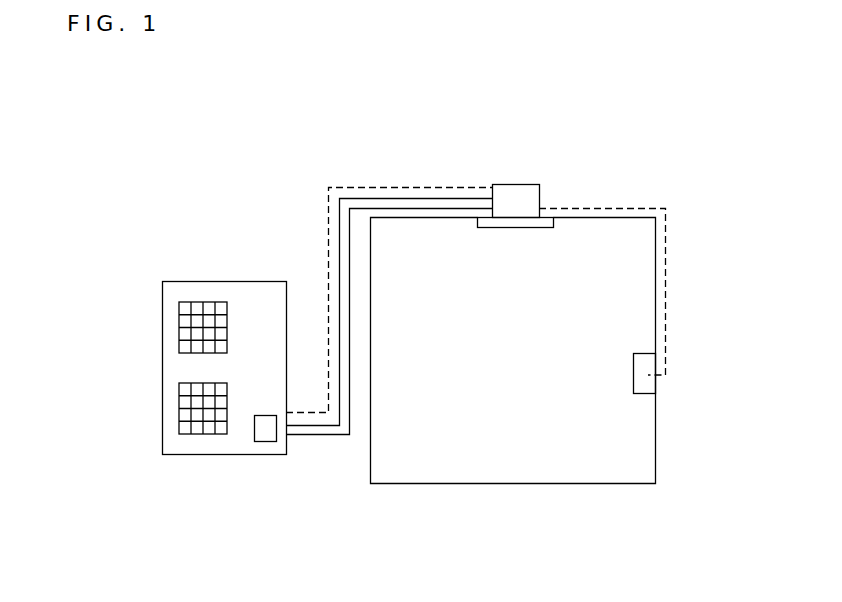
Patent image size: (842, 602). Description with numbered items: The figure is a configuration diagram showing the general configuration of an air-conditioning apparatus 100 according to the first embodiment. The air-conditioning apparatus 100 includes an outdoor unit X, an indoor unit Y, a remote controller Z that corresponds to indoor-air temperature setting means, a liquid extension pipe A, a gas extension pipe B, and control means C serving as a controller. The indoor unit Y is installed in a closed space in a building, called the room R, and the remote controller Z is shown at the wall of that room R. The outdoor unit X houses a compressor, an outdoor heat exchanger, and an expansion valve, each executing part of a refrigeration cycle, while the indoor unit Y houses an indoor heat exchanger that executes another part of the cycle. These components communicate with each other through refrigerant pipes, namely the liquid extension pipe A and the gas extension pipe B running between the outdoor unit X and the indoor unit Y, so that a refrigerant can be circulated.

The air-conditioning apparatus 100 is at (223, 110).
The outdoor unit X is at (200, 281).
The gas extension pipe B is at (338, 262).
The liquid extension pipe A is at (315, 436).
The control means C is at (263, 437).
The indoor unit Y is at (522, 184).
The room R is at (633, 456).
The remote controller Z is at (645, 363).